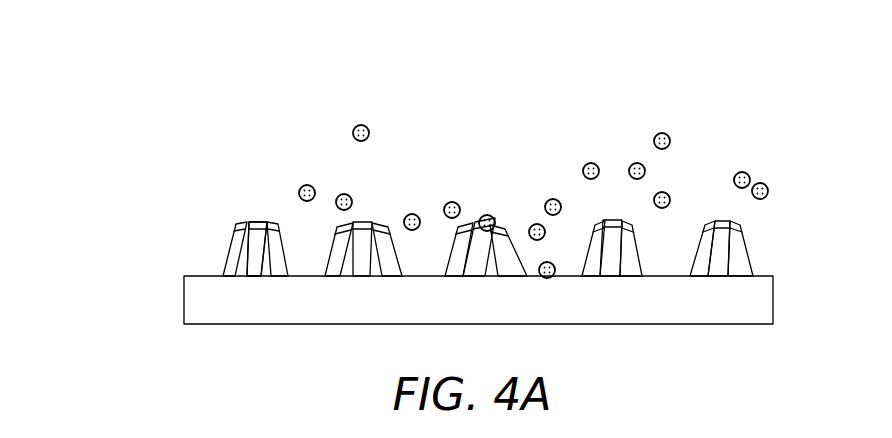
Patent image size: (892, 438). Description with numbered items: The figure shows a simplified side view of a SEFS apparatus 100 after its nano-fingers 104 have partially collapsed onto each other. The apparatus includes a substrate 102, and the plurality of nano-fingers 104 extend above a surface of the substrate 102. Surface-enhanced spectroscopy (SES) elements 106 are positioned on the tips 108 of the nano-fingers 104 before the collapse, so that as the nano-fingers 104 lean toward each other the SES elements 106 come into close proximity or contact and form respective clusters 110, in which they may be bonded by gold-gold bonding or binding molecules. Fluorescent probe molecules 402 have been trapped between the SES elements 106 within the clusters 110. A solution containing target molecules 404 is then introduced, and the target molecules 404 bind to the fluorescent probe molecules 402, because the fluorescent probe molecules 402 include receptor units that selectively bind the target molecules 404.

The SEFS apparatus 100 is at (106, 209).
The substrate 102 is at (184, 305).
The nano-fingers 104 is at (228, 258).
The surface-enhanced spectroscopy (SES) elements 106 is at (494, 220).
The tips 108 is at (261, 228).
The clusters 110 is at (628, 200).
The fluorescent probe molecules 402 is at (476, 198).
The target molecules 404 is at (353, 136).